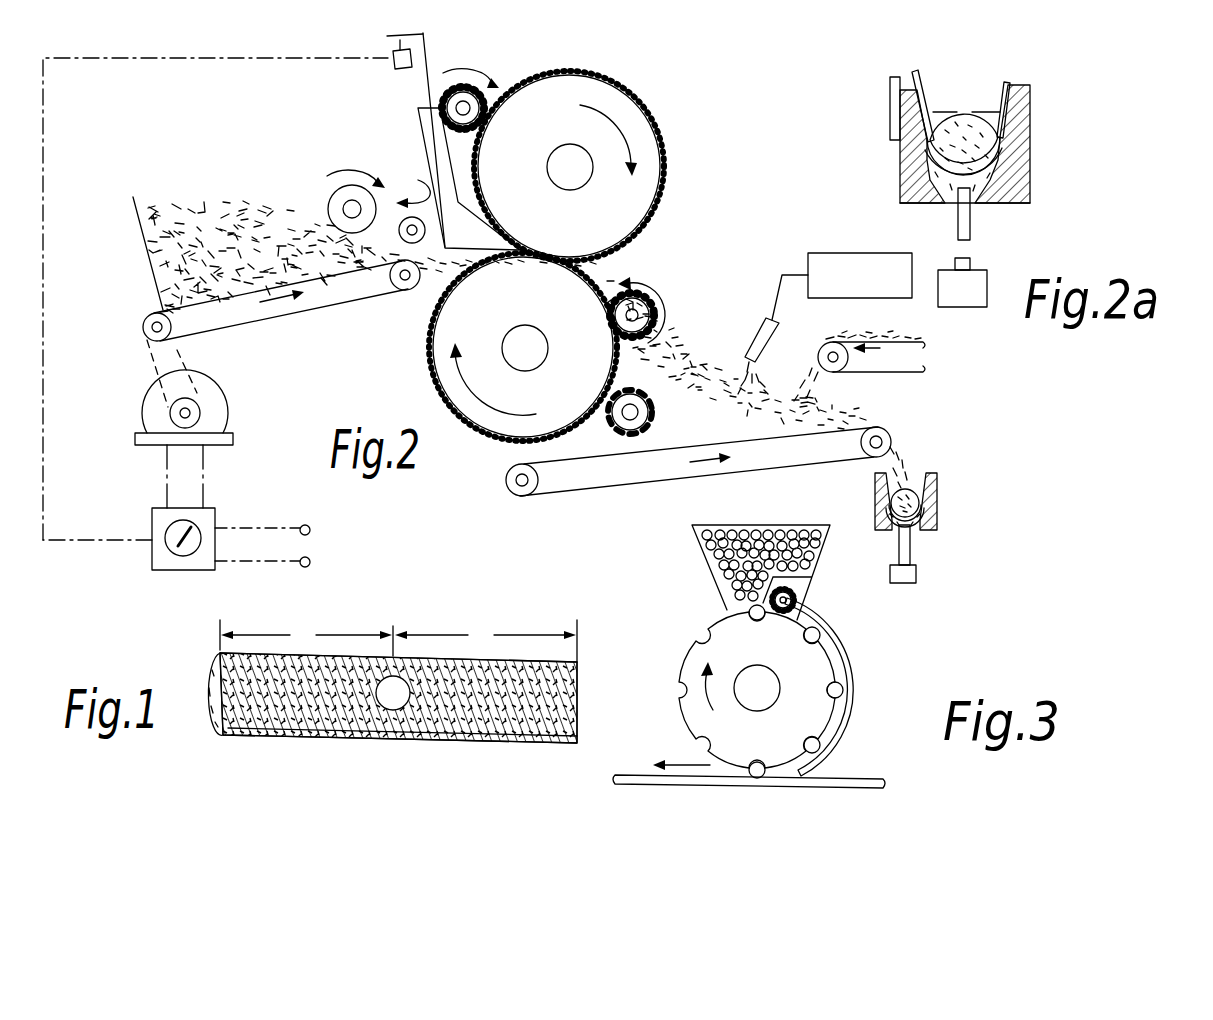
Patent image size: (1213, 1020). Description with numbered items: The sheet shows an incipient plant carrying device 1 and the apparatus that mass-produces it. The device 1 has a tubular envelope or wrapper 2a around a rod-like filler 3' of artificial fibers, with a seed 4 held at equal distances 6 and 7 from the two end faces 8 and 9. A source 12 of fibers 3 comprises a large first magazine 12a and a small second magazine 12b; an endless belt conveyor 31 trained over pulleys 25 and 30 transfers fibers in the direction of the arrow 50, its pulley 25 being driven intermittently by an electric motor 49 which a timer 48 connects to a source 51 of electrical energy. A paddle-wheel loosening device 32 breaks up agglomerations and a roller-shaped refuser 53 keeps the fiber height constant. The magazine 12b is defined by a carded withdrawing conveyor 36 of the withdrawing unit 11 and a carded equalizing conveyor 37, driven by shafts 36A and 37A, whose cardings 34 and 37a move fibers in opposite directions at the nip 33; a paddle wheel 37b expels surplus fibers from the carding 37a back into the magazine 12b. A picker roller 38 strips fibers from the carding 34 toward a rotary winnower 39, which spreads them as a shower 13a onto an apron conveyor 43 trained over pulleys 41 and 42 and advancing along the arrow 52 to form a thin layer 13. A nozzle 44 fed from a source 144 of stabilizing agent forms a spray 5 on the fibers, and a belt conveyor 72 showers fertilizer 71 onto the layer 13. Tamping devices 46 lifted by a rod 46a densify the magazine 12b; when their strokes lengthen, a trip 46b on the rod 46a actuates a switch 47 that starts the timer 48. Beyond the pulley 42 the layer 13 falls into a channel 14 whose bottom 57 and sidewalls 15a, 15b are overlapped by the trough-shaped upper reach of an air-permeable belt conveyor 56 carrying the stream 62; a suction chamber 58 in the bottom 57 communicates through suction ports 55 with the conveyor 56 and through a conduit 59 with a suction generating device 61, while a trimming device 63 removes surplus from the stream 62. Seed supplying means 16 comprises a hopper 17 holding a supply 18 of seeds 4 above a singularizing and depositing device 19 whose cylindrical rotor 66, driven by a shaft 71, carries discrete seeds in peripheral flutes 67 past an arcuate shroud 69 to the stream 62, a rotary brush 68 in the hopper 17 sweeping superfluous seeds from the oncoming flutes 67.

In FIG. 1, the incipient plant carrying device 1 is at (188, 667).
In FIG. 1, the envelope or wrapper 2a is at (283, 733).
In FIG. 2, the fibers 3 is at (372, 248).
In FIG. 1, the rod-like filler 3' is at (341, 745).
In FIG. 3, the seed 4 is at (807, 645).
In FIG. 1, the seed 4 is at (397, 712).
In FIG. 2, the spray 5 is at (748, 368).
In FIG. 1, the distance 6 is at (398, 641).
In FIG. 1, the distance 7 is at (485, 637).
In FIG. 1, the end face 8 is at (205, 712).
In FIG. 1, the end face 9 is at (578, 706).
In FIG. 2, the withdrawing unit 11 is at (702, 152).
In FIG. 2, the source of fibers 12 is at (188, 157).
In FIG. 2, the first magazine or reservoir 12a is at (262, 197).
In FIG. 2, the second magazine or reservoir 12b is at (432, 290).
In FIG. 2, the layer of fibrous material 13 is at (862, 426).
In FIG. 2, the shower 13a is at (680, 405).
In FIG. 2, the elongated channel 14 is at (926, 474).
In FIG. 2A, the elongated channel 14 is at (1048, 118).
In FIG. 2, the sidewall 15a is at (876, 494).
In FIG. 2A, the sidewall 15a is at (893, 125).
In FIG. 2, the sidewall 15b is at (940, 480).
In FIG. 2A, the sidewall 15b is at (1022, 85).
In FIG. 3, the seed supplying means 16 is at (892, 682).
In FIG. 3, the source of seeds 17 is at (700, 550).
In FIG. 3, the supply of seeds 18 is at (777, 528).
In FIG. 3, the seed singularizing and depositing device 19 is at (660, 715).
In FIG. 2, the pulley 25 is at (145, 329).
In FIG. 2, the pulley 30 is at (402, 292).
In FIG. 2, the endless belt conveyor 31 is at (268, 300).
In FIG. 2, the loosening device 32 is at (410, 215).
In FIG. 2, the nip 33 is at (652, 257).
In FIG. 2, the carding 34 is at (457, 433).
In FIG. 2, the withdrawing conveyor 36 is at (544, 319).
In FIG. 2, the shaft 36A is at (530, 363).
In FIG. 2, the equalizing conveyor 37 is at (584, 227).
In FIG. 2, the shaft 37A is at (559, 149).
In FIG. 2, the carding 37a is at (612, 84).
In FIG. 2, the paddle wheel 37b is at (490, 100).
In FIG. 2, the picker roller 38 is at (667, 330).
In FIG. 2, the rotary winnower 39 is at (616, 430).
In FIG. 2, the pulley 41 is at (514, 492).
In FIG. 2, the pulley 42 is at (895, 432).
In FIG. 2, the apron conveyor 43 is at (601, 490).
In FIG. 2, the nozzle 44 is at (773, 334).
In FIG. 2, the tamping device 46 is at (428, 142).
In FIG. 2, the lifting rod 46a is at (427, 42).
In FIG. 2, the trip 46b is at (407, 34).
In FIG. 2, the normally open switch 47 is at (393, 62).
In FIG. 2, the timer 48 is at (217, 518).
In FIG. 2, the electric motor 49 is at (218, 412).
In FIG. 2, the arrow 50 is at (272, 302).
In FIG. 2, the source of electrical energy 51 is at (275, 546).
In FIG. 2, the arrow 52 is at (687, 468).
In FIG. 2, the refuser 53 is at (329, 204).
In FIG. 2A, the suction ports 55 is at (975, 178).
In FIG. 2, the belt conveyor 56 is at (925, 515).
In FIG. 2A, the belt conveyor 56 is at (998, 160).
In FIG. 2A, the bottom 57 is at (925, 178).
In FIG. 2, the suction chamber 58 is at (883, 528).
In FIG. 2A, the suction chamber 58 is at (935, 200).
In FIG. 2, the conduit 59 is at (912, 549).
In FIG. 2A, the conduit 59 is at (957, 232).
In FIG. 2, the suction generating device 61 is at (910, 583).
In FIG. 2A, the suction generating device 61 is at (975, 301).
In FIG. 2, the stream of fibers 62 is at (922, 501).
In FIG. 2A, the stream of fibers 62 is at (962, 117).
In FIG. 3, the stream of fibers 62 is at (838, 779).
In FIG. 2A, the trimming or equalizing device 63 is at (950, 111).
In FIG. 3, the cylindrical rotor 66 is at (772, 656).
In FIG. 3, the flutes 67 is at (700, 633).
In FIG. 3, the rotary cylindrical brush 68 is at (800, 606).
In FIG. 3, the arcuate shroud 69 is at (838, 648).
In FIG. 2, the fertilizer particles 71 is at (859, 340).
In FIG. 3, the fertilizer particles 71 is at (749, 702).
In FIG. 2, the belt conveyor 72 is at (926, 346).
In FIG. 2, the source of stabilizing agent 144 is at (815, 252).